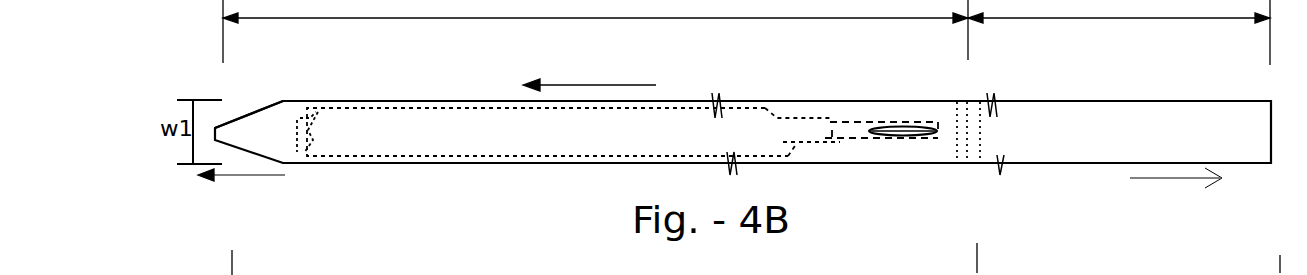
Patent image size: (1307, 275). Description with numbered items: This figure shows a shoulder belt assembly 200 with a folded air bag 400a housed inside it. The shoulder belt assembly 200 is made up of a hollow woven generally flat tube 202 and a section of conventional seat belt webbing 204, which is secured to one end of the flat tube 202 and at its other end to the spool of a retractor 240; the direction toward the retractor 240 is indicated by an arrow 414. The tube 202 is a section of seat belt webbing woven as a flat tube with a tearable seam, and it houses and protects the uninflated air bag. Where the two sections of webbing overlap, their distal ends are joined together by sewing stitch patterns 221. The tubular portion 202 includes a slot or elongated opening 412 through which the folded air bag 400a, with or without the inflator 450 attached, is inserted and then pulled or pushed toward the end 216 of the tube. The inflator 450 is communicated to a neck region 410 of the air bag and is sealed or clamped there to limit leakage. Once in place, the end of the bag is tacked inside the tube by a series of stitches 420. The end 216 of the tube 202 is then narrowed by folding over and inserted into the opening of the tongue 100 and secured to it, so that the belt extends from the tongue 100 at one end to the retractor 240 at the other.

The tongue 100 is at (289, 187).
The shoulder belt assembly 200 is at (450, 174).
The hollow woven flat tube 202 is at (405, 102).
The seat belt webbing 204 is at (1057, 128).
The end of tube 216 is at (283, 108).
The stitch patterns 221 is at (966, 150).
The retractor 240 is at (1198, 192).
The folded air bag 400a is at (533, 157).
The neck region 410 is at (825, 117).
The elongated opening 412 is at (898, 138).
The direction of pull 414 is at (565, 83).
The stitches 420 is at (298, 122).
The inflator 450 is at (901, 122).